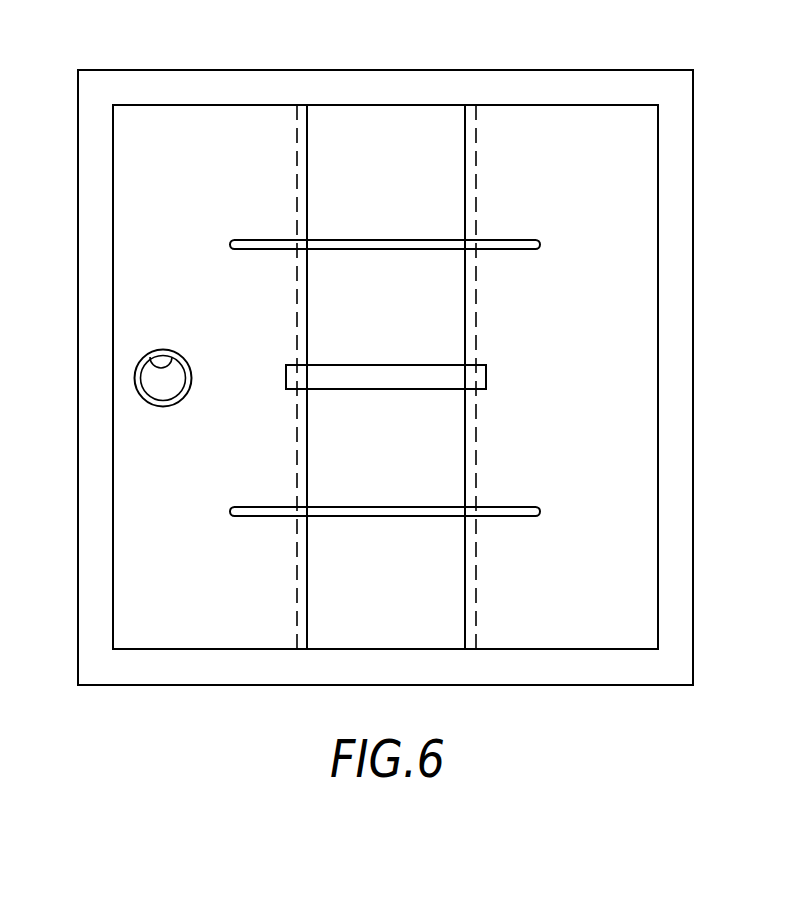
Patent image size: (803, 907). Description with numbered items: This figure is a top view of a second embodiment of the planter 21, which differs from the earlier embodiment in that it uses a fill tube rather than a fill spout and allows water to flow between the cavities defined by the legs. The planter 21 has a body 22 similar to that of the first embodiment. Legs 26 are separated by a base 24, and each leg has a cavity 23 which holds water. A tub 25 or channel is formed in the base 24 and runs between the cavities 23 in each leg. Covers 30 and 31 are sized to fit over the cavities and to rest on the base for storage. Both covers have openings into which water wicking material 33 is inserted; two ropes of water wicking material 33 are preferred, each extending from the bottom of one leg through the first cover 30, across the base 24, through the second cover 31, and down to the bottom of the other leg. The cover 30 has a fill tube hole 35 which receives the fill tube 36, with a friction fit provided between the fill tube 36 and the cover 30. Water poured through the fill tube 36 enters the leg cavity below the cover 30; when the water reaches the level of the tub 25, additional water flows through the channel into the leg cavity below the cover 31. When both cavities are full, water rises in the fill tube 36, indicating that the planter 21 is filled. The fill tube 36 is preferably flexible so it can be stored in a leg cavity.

The planter 21 is at (100, 35).
The body 22 is at (597, 68).
The cavity 23 is at (270, 190).
The base 24 is at (393, 120).
The tub 25 is at (385, 372).
The legs 26 is at (678, 553).
The first cover 30 is at (128, 168).
The second cover 31 is at (643, 167).
The water wicking material 33 is at (362, 250).
The fill tube hole 35 is at (168, 362).
The fill tube 36 is at (173, 397).